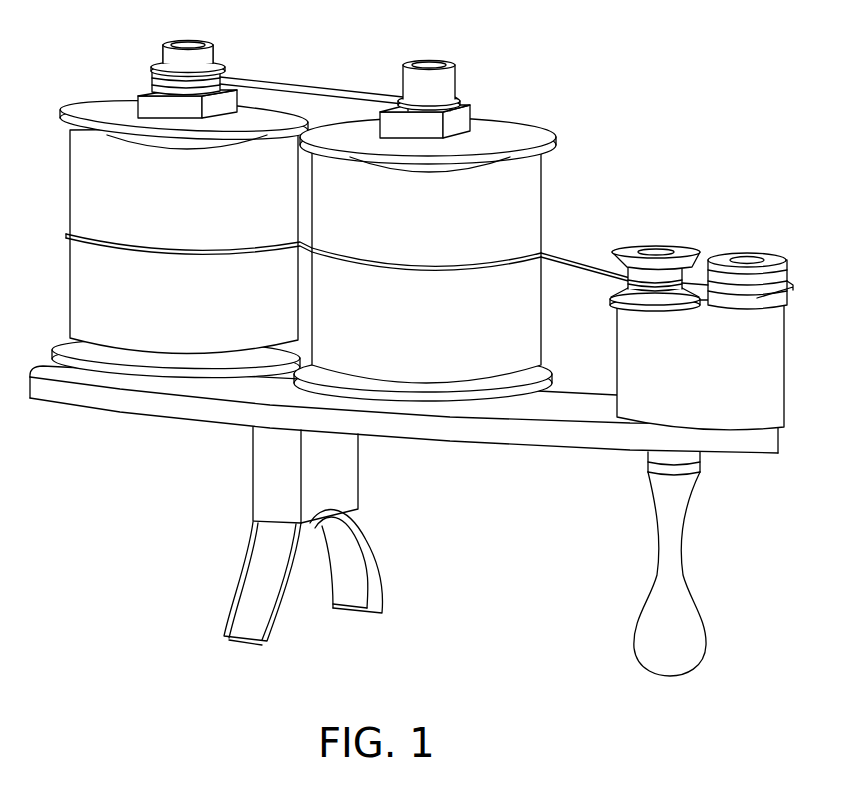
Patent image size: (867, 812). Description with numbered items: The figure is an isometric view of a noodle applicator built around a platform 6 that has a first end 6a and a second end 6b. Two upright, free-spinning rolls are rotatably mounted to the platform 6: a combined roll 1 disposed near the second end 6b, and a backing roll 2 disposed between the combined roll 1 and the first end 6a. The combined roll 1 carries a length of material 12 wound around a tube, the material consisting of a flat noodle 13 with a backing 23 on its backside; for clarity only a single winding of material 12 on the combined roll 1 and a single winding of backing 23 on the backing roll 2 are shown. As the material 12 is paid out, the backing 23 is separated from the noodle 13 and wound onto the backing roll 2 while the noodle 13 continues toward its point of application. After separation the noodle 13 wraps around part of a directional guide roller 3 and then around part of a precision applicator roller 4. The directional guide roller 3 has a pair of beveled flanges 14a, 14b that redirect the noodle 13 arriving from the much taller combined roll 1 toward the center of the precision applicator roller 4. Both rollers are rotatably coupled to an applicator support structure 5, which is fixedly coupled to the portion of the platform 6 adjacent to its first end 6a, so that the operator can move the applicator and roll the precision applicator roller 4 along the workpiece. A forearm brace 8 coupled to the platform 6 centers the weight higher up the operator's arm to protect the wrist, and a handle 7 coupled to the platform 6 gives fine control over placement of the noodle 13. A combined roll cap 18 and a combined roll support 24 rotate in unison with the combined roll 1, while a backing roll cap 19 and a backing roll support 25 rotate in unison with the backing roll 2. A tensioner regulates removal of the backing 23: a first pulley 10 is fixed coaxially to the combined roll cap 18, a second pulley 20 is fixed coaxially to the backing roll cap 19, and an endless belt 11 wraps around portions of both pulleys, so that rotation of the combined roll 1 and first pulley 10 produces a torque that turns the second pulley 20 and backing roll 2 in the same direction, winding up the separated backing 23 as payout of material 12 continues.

The combined roll 1 is at (64, 176).
The backing roll 2 is at (556, 203).
The directional guide roller 3 is at (663, 281).
The precision applicator roller 4 is at (782, 257).
The applicator support structure 5 is at (785, 371).
The platform 6 is at (748, 456).
The first end 6a is at (780, 438).
The second end 6b is at (26, 388).
The handle 7 is at (693, 598).
The forearm brace 8 is at (373, 556).
The first pulley 10 is at (222, 62).
The endless belt 11 is at (316, 79).
The length of material 12 is at (80, 258).
The noodle 13 is at (570, 258).
The beveled flange 14a is at (672, 249).
The beveled flange 14b is at (660, 299).
The combined roll cap 18 is at (92, 96).
The backing roll cap 19 is at (510, 123).
The second pulley 20 is at (456, 87).
The backing 23 is at (407, 270).
The combined roll support 24 is at (54, 343).
The backing roll support 25 is at (517, 389).